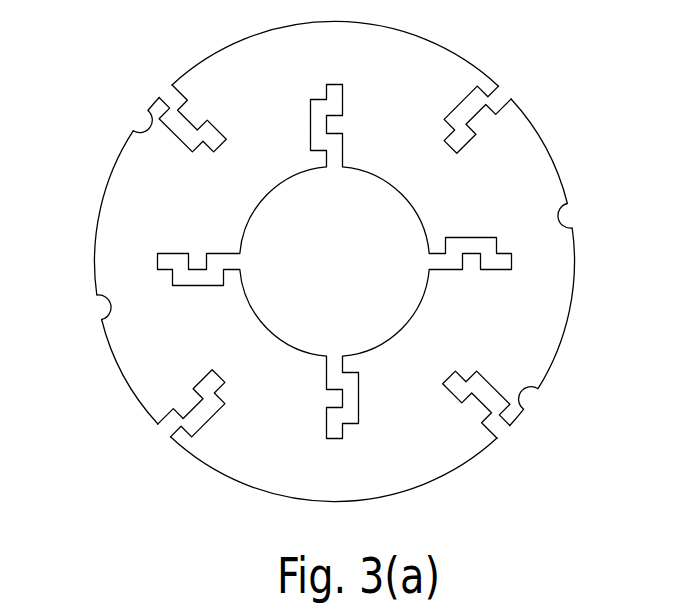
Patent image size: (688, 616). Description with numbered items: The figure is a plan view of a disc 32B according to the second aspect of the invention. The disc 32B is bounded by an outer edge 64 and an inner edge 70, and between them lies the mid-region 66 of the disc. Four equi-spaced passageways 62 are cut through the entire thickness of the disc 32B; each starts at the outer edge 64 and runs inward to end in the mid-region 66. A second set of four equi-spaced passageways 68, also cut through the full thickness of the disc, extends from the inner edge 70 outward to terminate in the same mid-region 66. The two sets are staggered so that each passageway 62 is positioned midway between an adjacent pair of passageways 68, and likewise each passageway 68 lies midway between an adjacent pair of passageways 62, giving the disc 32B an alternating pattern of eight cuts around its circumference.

The disc 32B is at (311, 251).
The outer edge 64 is at (405, 30).
The passageways 62 is at (172, 100).
The mid-region 66 is at (216, 208).
The passageways 68 is at (315, 115).
The inner edge 70 is at (410, 317).